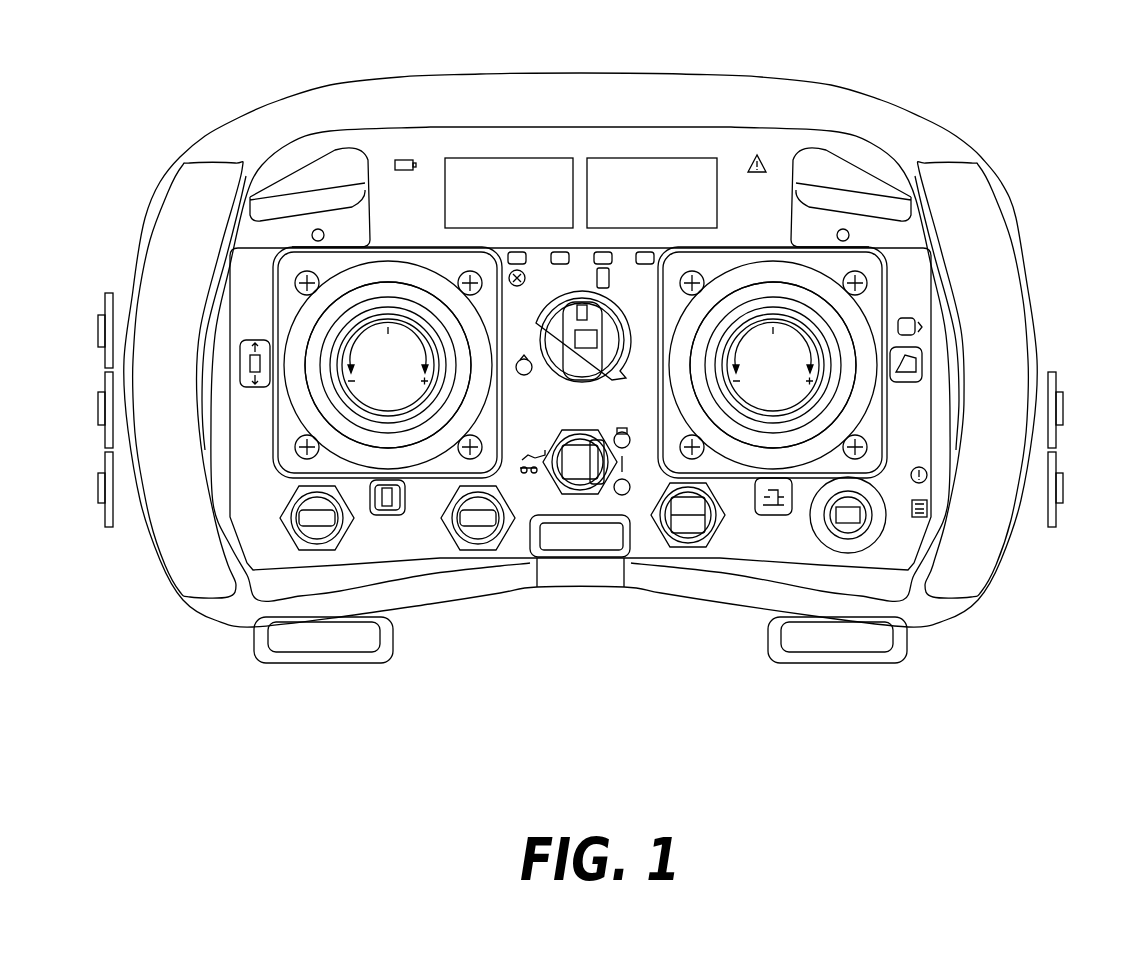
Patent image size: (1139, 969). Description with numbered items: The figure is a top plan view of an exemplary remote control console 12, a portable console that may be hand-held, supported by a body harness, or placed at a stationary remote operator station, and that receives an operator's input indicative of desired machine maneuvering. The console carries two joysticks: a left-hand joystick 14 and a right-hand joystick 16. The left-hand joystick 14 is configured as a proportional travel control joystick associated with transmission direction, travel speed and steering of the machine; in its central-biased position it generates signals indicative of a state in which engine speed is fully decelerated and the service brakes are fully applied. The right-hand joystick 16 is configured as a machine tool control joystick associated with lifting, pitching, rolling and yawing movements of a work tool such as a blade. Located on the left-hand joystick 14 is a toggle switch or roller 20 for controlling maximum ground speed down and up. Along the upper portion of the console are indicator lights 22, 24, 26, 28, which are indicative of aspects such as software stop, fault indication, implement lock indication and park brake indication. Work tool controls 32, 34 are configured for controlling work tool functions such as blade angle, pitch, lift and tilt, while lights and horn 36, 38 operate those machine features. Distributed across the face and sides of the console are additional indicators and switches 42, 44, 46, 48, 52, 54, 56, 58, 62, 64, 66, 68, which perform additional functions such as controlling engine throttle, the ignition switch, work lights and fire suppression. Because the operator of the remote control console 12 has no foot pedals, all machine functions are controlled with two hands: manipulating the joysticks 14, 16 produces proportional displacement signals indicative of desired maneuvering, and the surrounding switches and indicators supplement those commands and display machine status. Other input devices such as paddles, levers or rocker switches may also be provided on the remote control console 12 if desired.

The remote control console 12 is at (943, 657).
The left-hand joystick 14 is at (268, 450).
The right-hand joystick 16 is at (738, 482).
The toggle switch or roller 20 is at (385, 365).
The indicator light 22 is at (515, 257).
The indicator light 24 is at (560, 257).
The indicator light 26 is at (602, 257).
The indicator light 28 is at (645, 257).
The work tool control 32 is at (775, 345).
The work tool control 34 is at (862, 337).
The lights and horn control 36 is at (700, 190).
The lights and horn control 38 is at (1063, 406).
The additional indicator or switch 42 is at (1063, 486).
The additional indicator or switch 44 is at (1012, 567).
The additional indicator or switch 46 is at (848, 556).
The additional indicator or switch 48 is at (695, 548).
The additional indicator or switch 52 is at (584, 497).
The additional indicator or switch 54 is at (477, 552).
The additional indicator or switch 56 is at (575, 365).
The additional indicator or switch 58 is at (323, 550).
The additional indicator or switch 62 is at (98, 486).
The additional indicator or switch 64 is at (98, 406).
The additional indicator or switch 66 is at (98, 328).
The additional indicator or switch 68 is at (323, 340).